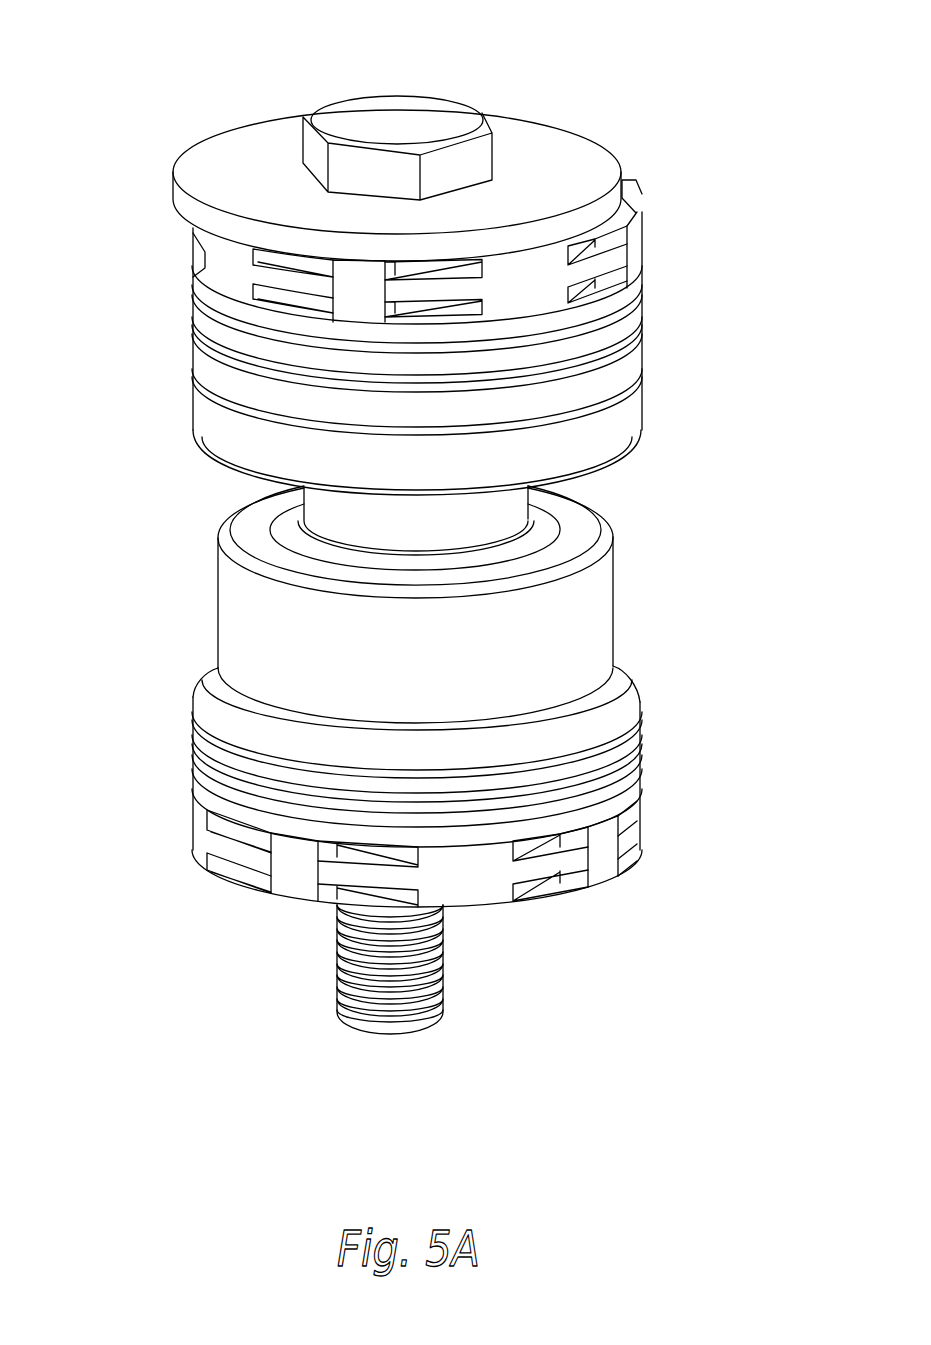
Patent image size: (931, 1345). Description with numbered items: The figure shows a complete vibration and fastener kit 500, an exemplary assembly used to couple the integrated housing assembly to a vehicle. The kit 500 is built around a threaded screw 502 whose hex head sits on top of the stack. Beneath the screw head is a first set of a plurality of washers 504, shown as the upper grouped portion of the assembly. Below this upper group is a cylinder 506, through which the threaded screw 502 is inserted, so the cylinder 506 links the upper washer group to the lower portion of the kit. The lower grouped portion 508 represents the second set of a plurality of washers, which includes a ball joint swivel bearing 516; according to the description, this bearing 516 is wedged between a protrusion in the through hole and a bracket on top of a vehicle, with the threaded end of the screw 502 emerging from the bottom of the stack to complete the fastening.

The vibration and fastener kit 500 is at (435, 518).
The threaded screw 502 is at (375, 114).
The first set of a plurality of washers 504 is at (476, 269).
The cylinder 506 is at (339, 510).
The lower body portion 508 is at (435, 760).
The ball joint swivel bearing 516 is at (326, 658).